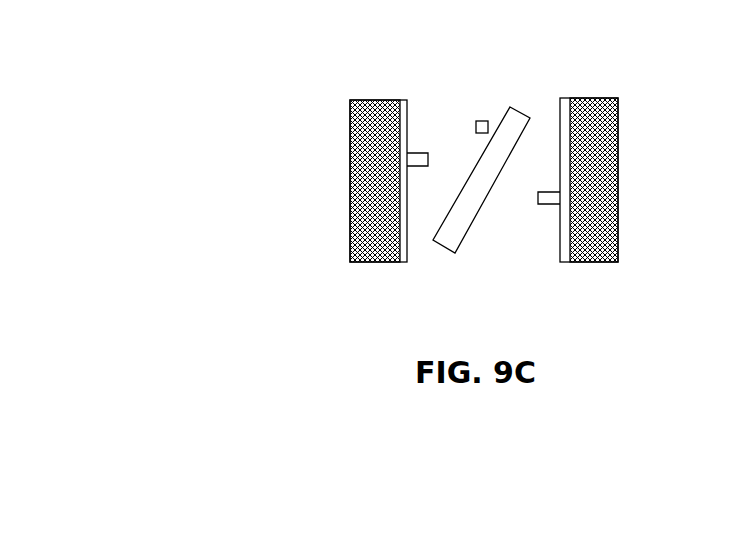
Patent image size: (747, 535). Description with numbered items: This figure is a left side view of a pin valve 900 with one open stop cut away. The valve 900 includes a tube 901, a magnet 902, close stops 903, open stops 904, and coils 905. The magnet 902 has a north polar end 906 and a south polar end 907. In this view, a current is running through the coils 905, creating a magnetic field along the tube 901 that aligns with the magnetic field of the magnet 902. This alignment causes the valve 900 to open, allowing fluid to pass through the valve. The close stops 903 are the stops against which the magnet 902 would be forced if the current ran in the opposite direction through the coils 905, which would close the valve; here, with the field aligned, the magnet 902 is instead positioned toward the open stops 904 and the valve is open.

The valve 900 is at (266, 78).
The tube 901 is at (402, 100).
The magnet 902 is at (432, 268).
The close stops 903 is at (418, 153).
The open stops 904 is at (482, 120).
The coils 905 is at (350, 163).
The north polar end 906 is at (522, 110).
The south polar end 907 is at (462, 248).